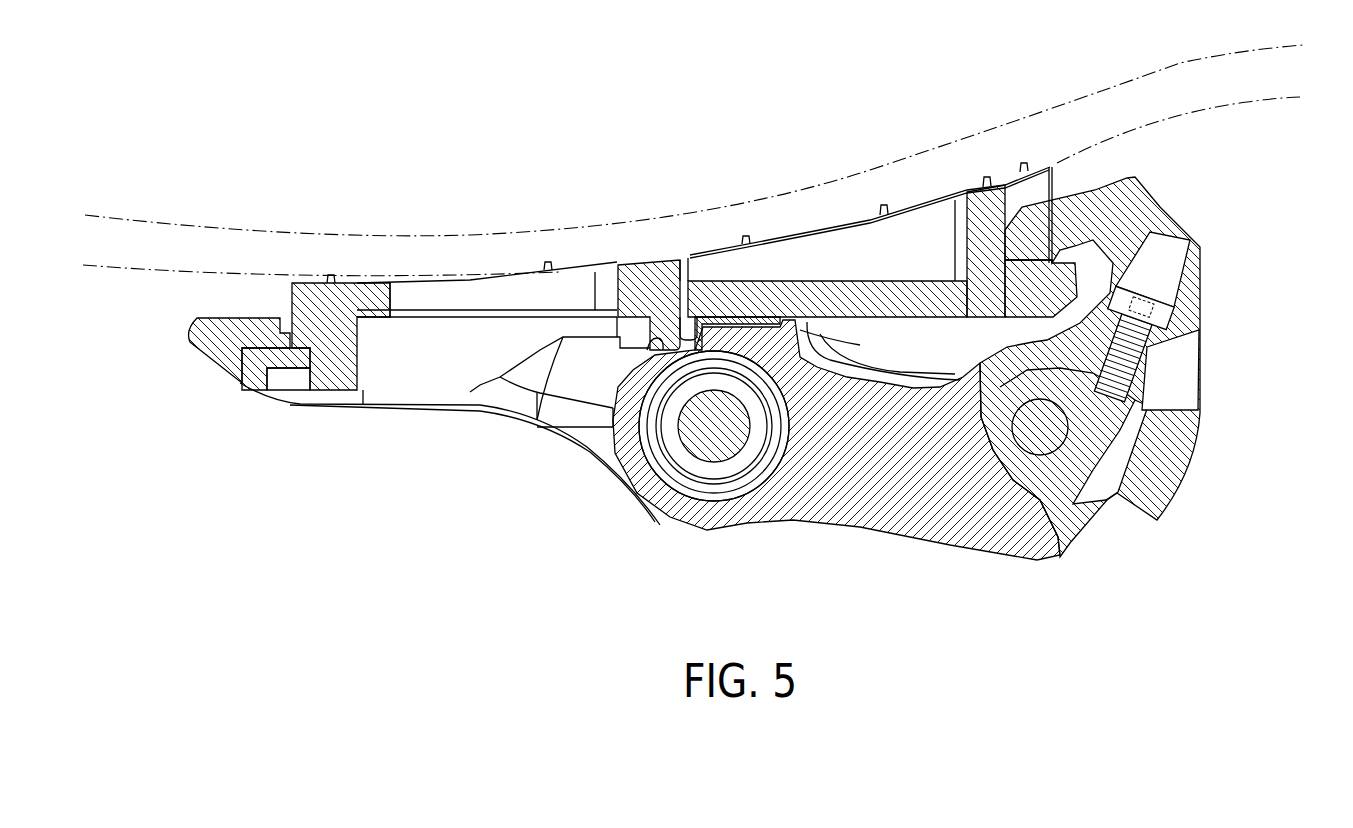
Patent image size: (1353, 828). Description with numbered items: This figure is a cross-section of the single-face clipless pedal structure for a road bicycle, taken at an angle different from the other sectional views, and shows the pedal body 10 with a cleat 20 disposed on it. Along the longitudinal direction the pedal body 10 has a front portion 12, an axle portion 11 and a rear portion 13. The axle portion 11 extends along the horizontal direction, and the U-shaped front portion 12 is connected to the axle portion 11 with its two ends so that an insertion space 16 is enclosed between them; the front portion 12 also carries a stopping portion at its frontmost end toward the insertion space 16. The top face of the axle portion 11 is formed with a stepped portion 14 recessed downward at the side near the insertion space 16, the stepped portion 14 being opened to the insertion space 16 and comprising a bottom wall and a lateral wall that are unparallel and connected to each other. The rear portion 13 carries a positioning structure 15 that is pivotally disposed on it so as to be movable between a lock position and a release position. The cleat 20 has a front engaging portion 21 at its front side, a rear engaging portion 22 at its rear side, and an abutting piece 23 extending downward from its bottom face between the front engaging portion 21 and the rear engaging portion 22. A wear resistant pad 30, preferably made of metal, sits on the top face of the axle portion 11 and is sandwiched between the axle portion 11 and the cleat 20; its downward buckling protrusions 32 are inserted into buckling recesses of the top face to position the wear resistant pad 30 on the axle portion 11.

The pedal body 10 is at (853, 543).
The axle portion 11 is at (668, 500).
The front portion 12 is at (217, 347).
The rear portion 13 is at (990, 537).
The stepped portion 14 is at (645, 347).
The positioning structure 15 is at (1180, 332).
The insertion space 16 is at (437, 393).
The cleat 20 is at (343, 305).
The front engaging portion 21 is at (253, 380).
The rear engaging portion 22 is at (1017, 290).
The abutting piece 23 is at (667, 320).
The wear resistant pad 30 is at (752, 317).
The buckling protrusions 32 is at (683, 317).